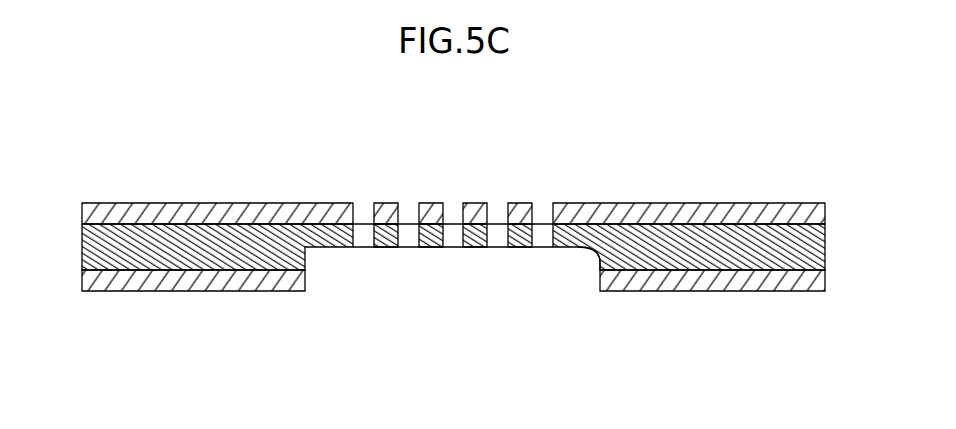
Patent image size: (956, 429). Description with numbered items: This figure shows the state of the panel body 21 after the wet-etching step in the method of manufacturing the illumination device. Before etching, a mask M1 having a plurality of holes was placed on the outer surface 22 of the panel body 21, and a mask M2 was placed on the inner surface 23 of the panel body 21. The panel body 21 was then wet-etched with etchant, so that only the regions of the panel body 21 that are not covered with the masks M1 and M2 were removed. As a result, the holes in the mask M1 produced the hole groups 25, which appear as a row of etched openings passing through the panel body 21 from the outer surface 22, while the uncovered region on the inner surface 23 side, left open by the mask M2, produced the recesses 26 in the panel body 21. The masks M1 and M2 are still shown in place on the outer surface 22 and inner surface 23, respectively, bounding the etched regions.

The panel body 21 is at (197, 237).
The outer surface 22 is at (676, 223).
The inner surface 23 is at (707, 268).
The hole groups 25 is at (398, 178).
The recesses 26 is at (579, 259).
The mask M1 is at (314, 210).
The mask M2 is at (207, 285).